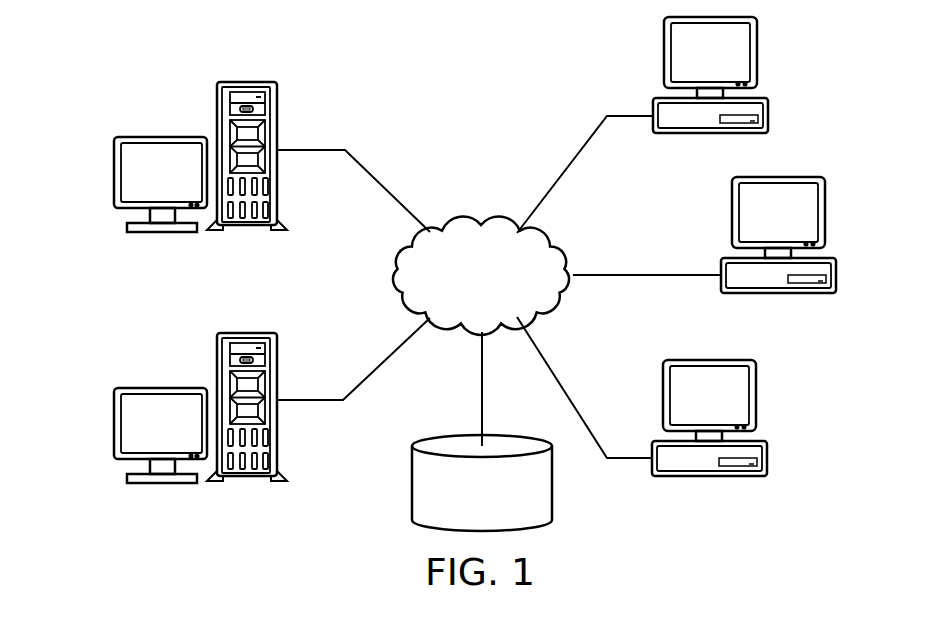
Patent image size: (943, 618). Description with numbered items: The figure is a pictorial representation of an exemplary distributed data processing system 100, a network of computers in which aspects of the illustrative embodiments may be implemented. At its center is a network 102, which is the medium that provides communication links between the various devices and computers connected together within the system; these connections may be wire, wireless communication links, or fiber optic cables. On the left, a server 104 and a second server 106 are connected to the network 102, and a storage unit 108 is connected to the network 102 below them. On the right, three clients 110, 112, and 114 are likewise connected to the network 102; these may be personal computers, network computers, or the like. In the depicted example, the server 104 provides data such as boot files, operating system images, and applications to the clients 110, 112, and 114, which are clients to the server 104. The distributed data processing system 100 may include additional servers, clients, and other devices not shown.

The distributed data processing system 100 is at (348, 70).
The network 102 is at (455, 225).
The server 104 is at (114, 175).
The server 106 is at (114, 423).
The storage unit 108 is at (413, 482).
The client 110 is at (769, 107).
The client 112 is at (838, 285).
The client 114 is at (770, 468).